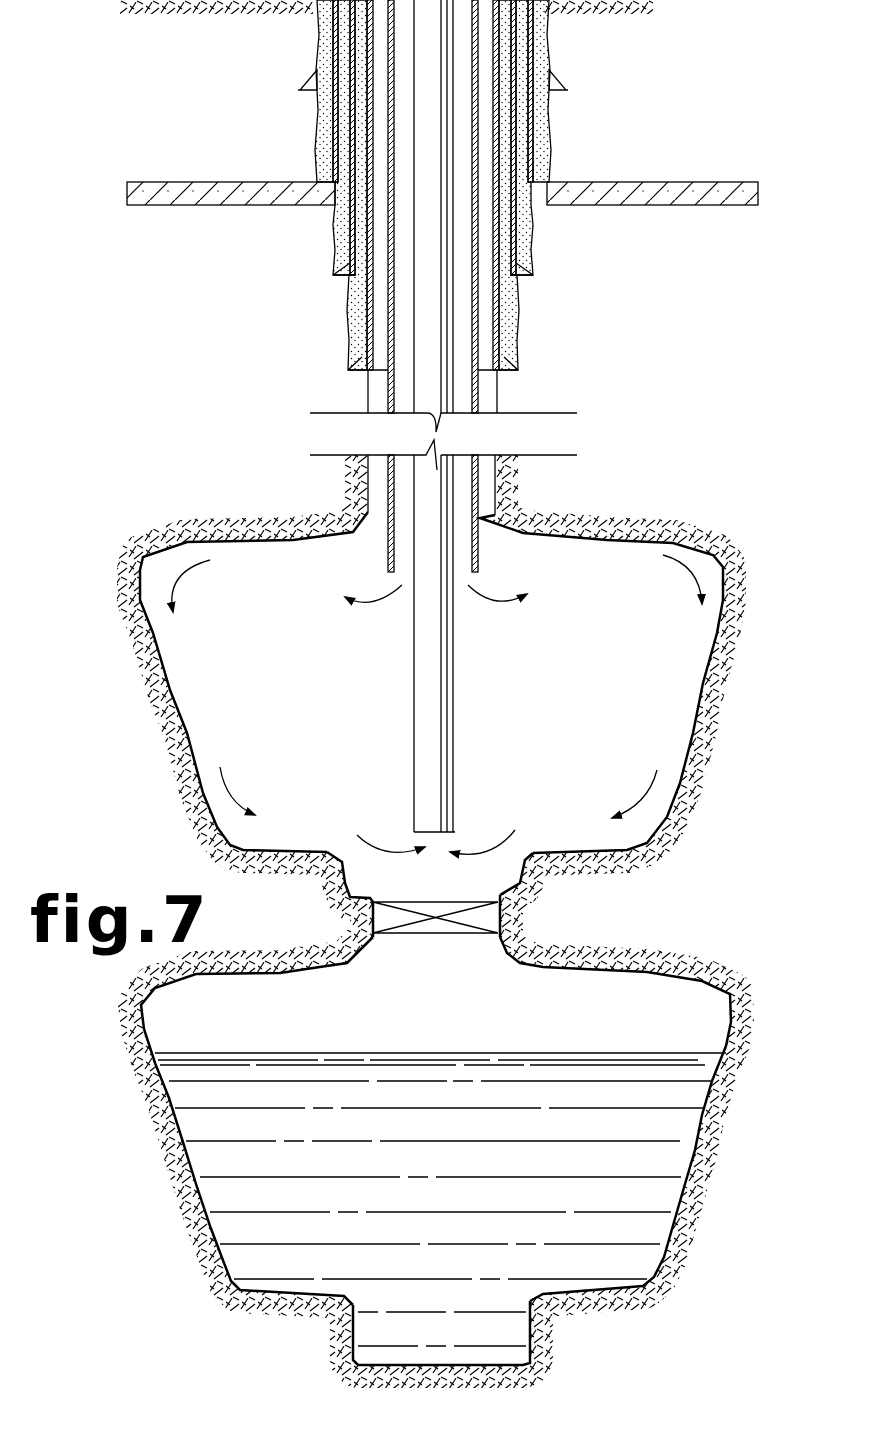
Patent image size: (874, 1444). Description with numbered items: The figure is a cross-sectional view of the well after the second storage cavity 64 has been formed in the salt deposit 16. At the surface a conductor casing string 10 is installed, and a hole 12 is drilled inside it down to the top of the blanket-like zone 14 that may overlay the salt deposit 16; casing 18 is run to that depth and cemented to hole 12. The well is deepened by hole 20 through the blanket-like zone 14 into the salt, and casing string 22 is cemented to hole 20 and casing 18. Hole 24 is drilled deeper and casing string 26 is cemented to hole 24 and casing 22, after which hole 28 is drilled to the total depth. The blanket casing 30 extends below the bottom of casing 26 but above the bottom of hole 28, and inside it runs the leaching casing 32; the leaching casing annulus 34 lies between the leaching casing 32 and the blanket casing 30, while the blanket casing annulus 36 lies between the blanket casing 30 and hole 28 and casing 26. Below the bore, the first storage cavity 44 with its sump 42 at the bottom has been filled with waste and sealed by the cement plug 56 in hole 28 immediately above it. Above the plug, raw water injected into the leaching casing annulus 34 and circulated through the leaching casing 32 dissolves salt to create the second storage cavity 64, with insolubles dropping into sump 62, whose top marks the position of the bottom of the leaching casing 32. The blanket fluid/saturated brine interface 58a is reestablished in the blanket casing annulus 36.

The conductor casing string 10 is at (545, 43).
The hole 12 is at (545, 112).
The blanket-like zone 14 is at (663, 192).
The salt deposit 16 is at (245, 232).
The casing 18 is at (543, 133).
The hole 20 is at (547, 160).
The casing string 22 is at (528, 240).
The hole 24 is at (512, 300).
The casing string 26 is at (497, 335).
The hole 28 is at (495, 392).
The blanket casing 30 is at (368, 380).
The leaching casing 32 is at (425, 494).
The leaching casing annulus 34 is at (402, 400).
The blanket casing annulus 36 is at (378, 470).
The interface 58a is at (503, 497).
The second storage cavity 64 is at (703, 685).
The sump 62 is at (530, 880).
The cement plug 56 is at (492, 918).
The first storage cavity 44 is at (702, 1125).
The sump 42 is at (533, 1332).